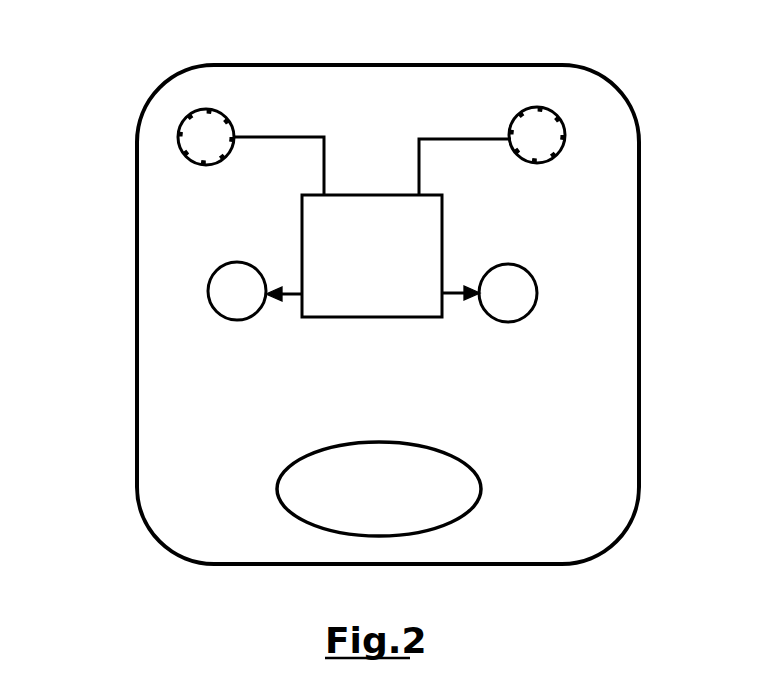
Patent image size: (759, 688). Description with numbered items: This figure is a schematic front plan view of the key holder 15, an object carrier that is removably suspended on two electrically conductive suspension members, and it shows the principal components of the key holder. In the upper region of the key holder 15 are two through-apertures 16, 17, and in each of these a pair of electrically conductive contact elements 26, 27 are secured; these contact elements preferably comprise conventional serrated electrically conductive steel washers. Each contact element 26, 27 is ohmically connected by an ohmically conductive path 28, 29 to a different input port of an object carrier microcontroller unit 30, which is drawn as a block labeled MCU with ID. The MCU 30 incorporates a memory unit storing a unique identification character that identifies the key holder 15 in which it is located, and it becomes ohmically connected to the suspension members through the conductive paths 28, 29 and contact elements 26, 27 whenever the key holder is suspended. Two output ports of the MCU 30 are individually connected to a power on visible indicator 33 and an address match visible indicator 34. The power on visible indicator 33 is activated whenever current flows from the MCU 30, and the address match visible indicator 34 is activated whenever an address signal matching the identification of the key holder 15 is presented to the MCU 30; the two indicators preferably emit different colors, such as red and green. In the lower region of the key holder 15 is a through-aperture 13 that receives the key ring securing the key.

The through-aperture 13 is at (462, 506).
The key holder 15 is at (644, 296).
The through-aperture 16 is at (192, 107).
The through-aperture 17 is at (565, 133).
The contact element 26 is at (228, 118).
The contact element 27 is at (537, 107).
The ohmically conductive path 28 is at (308, 137).
The ohmically conductive path 29 is at (445, 139).
The object carrier microcontroller unit 30 is at (430, 250).
The power on visible indicator 33 is at (512, 290).
The address match visible indicator 34 is at (237, 283).